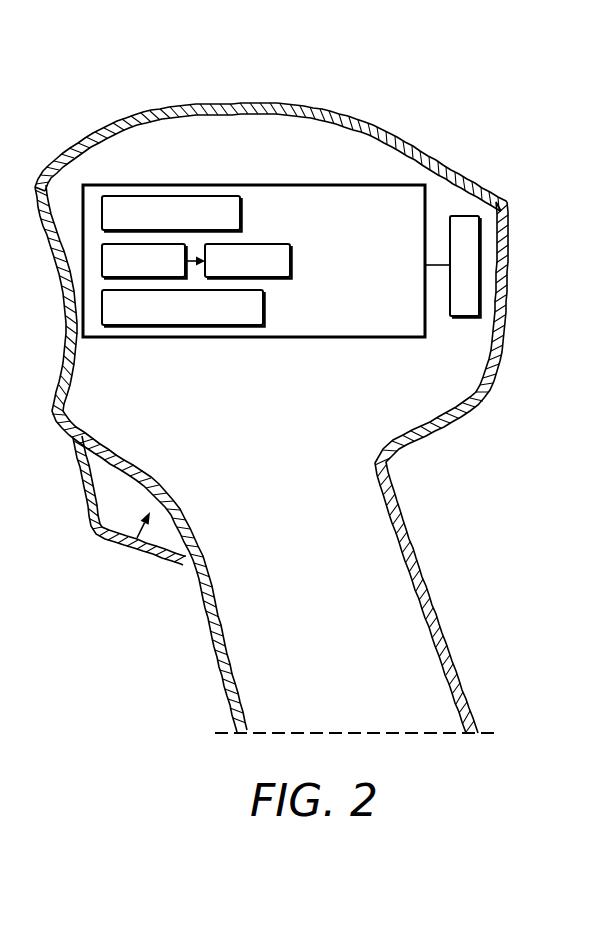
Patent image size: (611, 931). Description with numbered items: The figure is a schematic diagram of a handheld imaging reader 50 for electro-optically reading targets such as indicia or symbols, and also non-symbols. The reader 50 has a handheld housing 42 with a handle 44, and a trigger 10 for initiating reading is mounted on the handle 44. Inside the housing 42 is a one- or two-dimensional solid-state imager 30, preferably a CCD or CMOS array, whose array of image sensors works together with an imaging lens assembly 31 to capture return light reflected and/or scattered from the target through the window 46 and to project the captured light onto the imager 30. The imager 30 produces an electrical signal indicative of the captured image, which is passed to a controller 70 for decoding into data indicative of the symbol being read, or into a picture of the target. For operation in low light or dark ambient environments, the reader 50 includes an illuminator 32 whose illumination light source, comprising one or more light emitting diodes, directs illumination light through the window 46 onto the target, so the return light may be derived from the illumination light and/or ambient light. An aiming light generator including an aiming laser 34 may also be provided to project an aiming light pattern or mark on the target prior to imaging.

The trigger 10 is at (114, 576).
The imaging reader 50 is at (533, 80).
The handheld housing 42 is at (510, 262).
The handle 44 is at (415, 549).
The window 46 is at (62, 301).
The imager 30 is at (291, 262).
The imaging lens assembly 31 is at (101, 258).
The illuminator 32 is at (241, 215).
The aiming laser 34 is at (264, 306).
The controller 70 is at (466, 214).